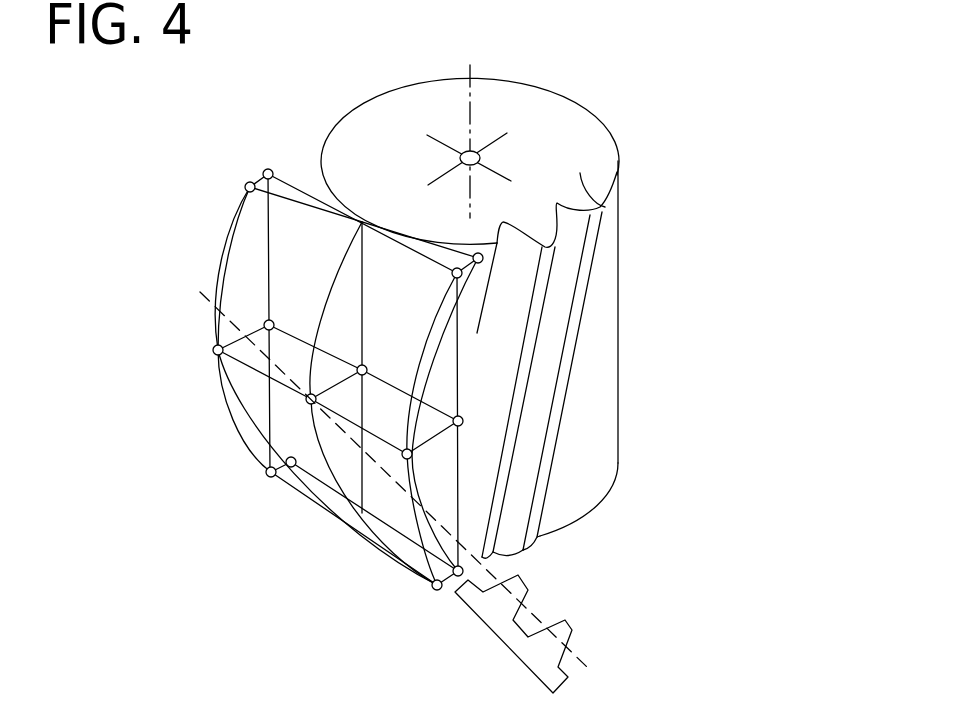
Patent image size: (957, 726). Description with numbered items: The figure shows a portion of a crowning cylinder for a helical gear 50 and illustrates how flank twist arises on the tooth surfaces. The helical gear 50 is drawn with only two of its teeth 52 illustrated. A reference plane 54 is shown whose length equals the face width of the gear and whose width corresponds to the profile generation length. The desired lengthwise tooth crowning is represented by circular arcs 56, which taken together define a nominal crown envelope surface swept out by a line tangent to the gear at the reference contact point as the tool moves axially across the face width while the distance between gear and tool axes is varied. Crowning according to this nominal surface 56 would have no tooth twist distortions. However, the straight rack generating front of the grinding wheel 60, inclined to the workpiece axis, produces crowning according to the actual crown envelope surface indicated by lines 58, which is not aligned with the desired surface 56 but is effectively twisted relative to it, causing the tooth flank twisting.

The helical gear 50 is at (408, 102).
The teeth 52 is at (606, 210).
The reference plane 54 is at (450, 493).
The circular arcs 56 is at (235, 242).
The lines 58 is at (402, 529).
The grinding wheel 60 is at (531, 647).